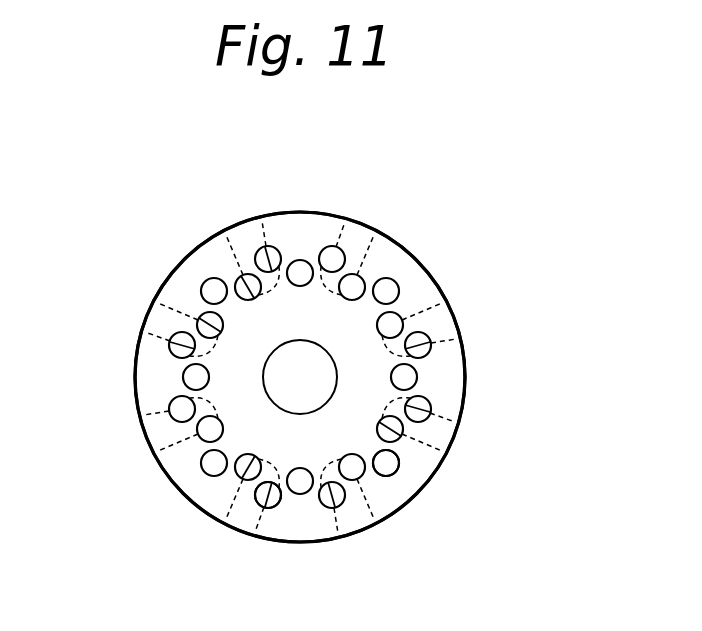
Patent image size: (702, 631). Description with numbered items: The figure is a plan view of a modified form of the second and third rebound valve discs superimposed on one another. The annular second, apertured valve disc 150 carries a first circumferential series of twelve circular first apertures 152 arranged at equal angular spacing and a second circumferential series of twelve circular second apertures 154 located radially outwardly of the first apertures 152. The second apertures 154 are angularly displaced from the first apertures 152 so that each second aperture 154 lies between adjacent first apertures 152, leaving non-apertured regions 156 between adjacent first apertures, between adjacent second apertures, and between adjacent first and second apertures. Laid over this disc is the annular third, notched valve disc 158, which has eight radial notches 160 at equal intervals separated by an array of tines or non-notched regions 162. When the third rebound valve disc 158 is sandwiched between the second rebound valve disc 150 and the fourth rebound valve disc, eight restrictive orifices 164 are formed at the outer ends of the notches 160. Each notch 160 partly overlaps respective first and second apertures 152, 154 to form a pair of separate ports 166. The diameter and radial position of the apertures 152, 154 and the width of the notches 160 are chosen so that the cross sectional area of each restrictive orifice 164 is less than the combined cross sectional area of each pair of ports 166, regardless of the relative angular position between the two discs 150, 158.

The second apertured valve disc 150 is at (410, 265).
The first apertures 152 is at (380, 333).
The second apertures 154 is at (391, 470).
The non-apertured regions 156 is at (225, 273).
The third notched valve disc 158 is at (440, 380).
The radial notches 160 is at (433, 423).
The tines or non-notched regions 162 is at (157, 372).
The restrictive orifices 164 is at (455, 317).
The ports 166 is at (346, 298).